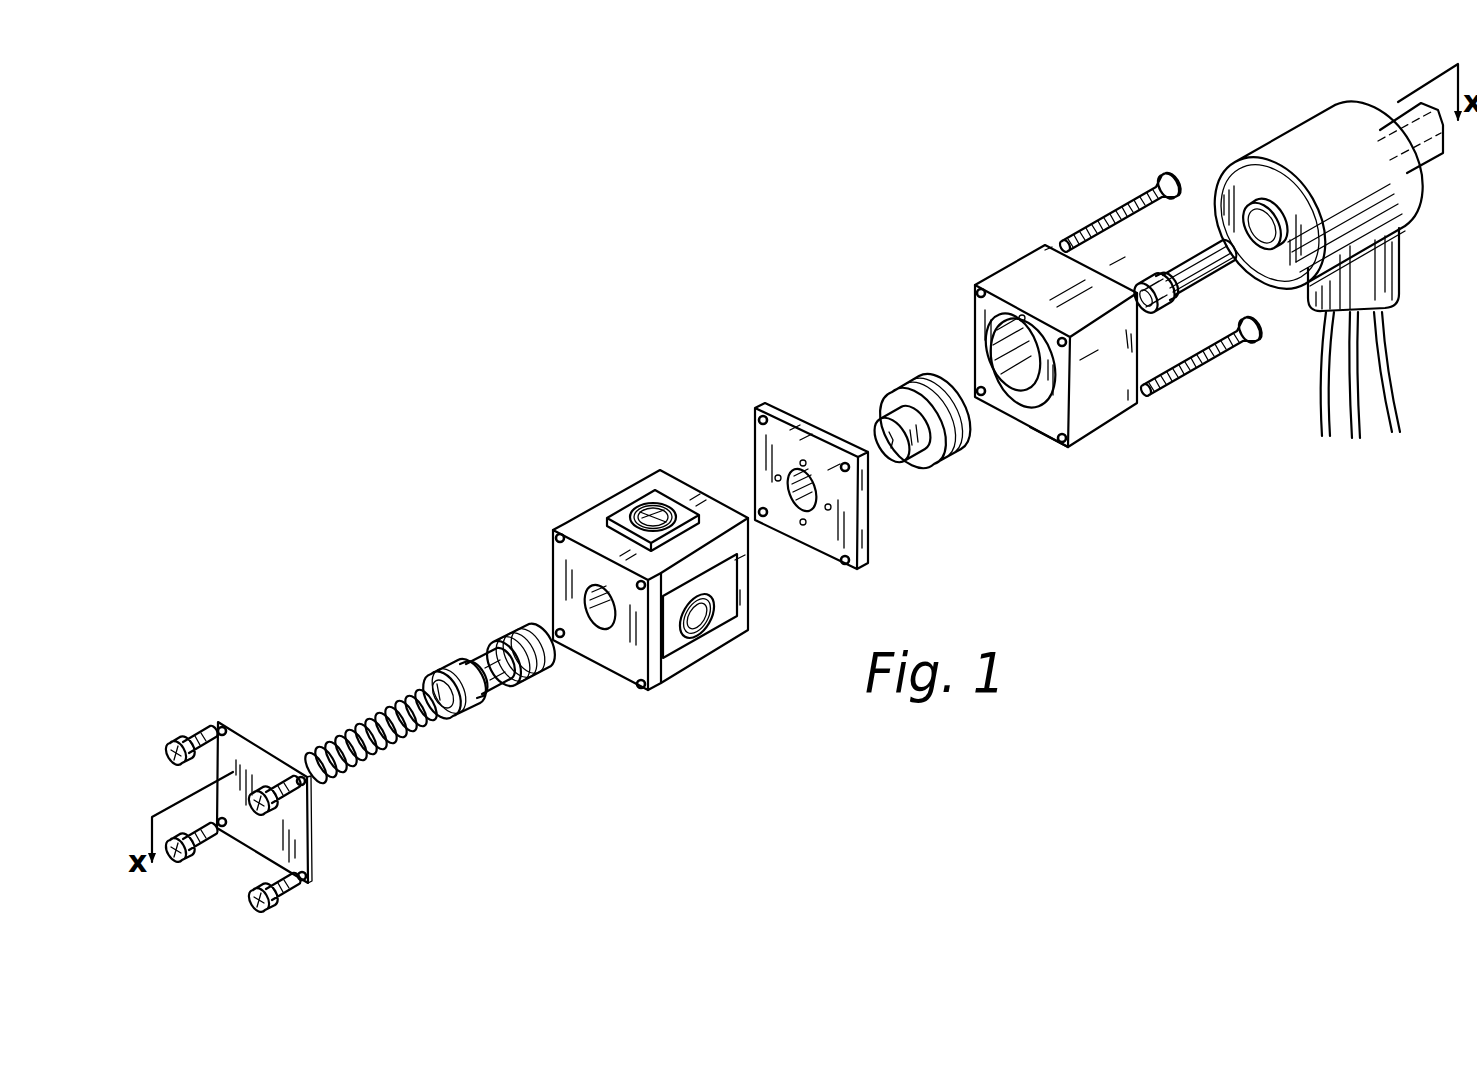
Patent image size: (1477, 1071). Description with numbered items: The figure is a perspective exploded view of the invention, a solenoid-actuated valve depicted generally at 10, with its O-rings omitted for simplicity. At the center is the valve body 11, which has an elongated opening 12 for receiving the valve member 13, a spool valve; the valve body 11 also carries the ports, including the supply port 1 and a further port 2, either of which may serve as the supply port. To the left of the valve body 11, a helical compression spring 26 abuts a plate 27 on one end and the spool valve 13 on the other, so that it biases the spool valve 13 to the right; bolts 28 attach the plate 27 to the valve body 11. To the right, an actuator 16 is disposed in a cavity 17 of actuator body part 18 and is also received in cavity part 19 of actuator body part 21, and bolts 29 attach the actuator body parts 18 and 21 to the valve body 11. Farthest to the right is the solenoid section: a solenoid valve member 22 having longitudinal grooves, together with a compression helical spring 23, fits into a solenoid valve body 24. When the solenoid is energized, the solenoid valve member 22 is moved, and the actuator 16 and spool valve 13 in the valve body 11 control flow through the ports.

The supply port 1 is at (703, 632).
The port 2 is at (653, 481).
The valve 10 is at (670, 332).
The valve body 11 is at (637, 581).
The elongated opening 12 is at (607, 620).
The valve member 13 is at (460, 651).
The actuator 16 is at (905, 376).
The cavity 17 is at (1072, 432).
The actuator body part 18 is at (1058, 322).
The cavity part 19 is at (800, 493).
The actuator body part 21 is at (781, 448).
The solenoid valve member 22 is at (1210, 245).
The compression helical spring 23 is at (1190, 302).
The solenoid valve body 24 is at (1378, 178).
The helical compression spring 26 is at (345, 735).
The plate 27 is at (273, 763).
The bolts 28 is at (192, 735).
The bolts 29 is at (1125, 202).